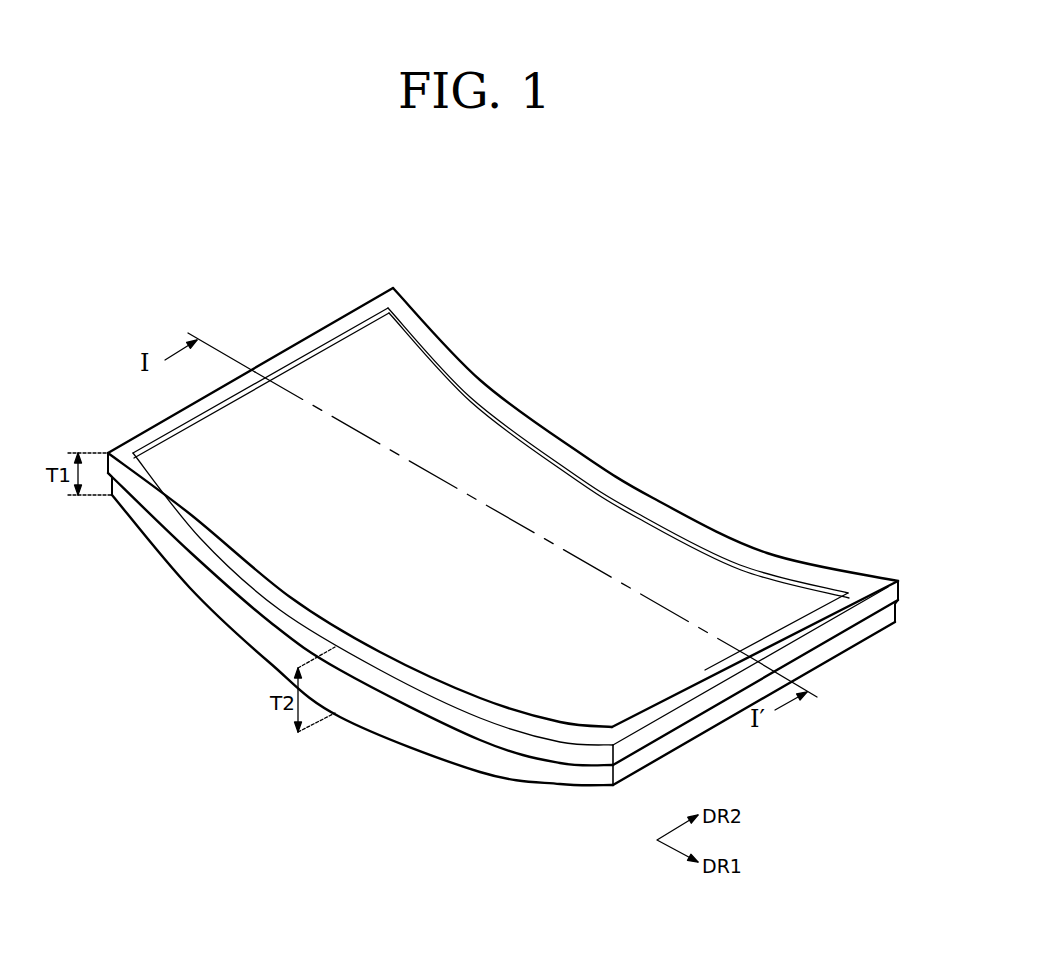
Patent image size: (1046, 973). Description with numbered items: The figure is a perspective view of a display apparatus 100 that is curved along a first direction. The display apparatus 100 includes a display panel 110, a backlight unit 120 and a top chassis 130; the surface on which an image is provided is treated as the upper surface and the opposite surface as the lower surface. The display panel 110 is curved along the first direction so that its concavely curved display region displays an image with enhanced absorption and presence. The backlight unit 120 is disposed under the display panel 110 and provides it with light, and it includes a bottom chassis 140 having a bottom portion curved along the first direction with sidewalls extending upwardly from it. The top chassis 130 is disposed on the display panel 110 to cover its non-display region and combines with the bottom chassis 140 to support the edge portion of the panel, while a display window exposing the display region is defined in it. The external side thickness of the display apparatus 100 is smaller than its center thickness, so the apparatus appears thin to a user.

The display apparatus 100 is at (653, 397).
The display panel 110 is at (683, 562).
The backlight unit 120 is at (243, 620).
The top chassis 130 is at (815, 577).
The bottom chassis 140 is at (868, 625).